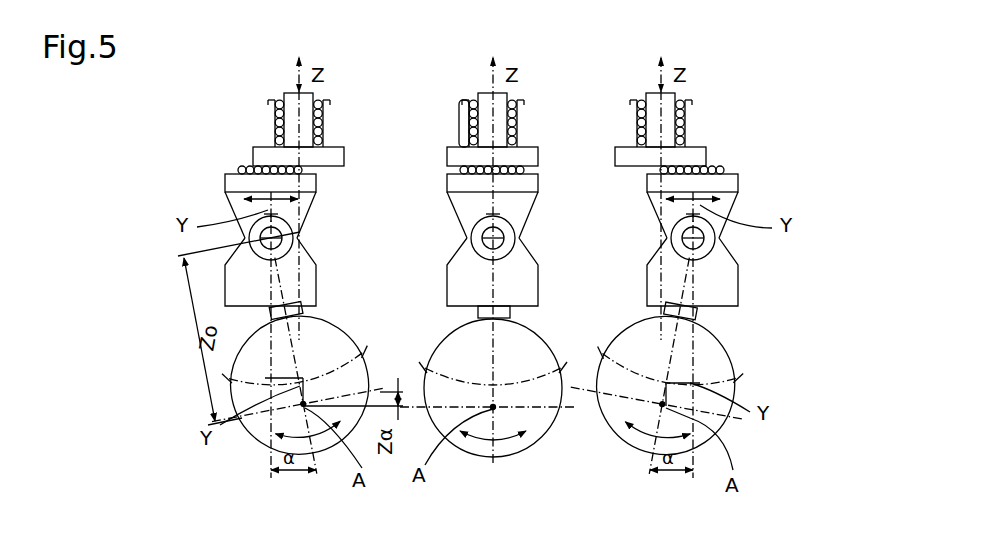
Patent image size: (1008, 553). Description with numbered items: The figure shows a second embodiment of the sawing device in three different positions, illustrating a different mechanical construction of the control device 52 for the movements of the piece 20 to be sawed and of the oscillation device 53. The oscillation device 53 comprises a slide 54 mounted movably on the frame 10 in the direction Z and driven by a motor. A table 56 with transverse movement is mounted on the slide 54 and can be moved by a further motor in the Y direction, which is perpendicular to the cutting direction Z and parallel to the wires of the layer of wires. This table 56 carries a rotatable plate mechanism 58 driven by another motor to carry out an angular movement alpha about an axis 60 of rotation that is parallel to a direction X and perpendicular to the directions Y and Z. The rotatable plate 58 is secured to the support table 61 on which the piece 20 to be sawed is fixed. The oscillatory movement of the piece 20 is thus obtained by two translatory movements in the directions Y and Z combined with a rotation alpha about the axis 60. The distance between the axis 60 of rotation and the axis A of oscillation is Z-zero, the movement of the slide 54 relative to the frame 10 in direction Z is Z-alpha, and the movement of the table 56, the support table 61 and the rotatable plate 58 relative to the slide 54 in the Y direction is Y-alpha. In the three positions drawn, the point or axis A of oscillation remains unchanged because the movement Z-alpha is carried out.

The frame 10 is at (458, 125).
The piece to be sawed 20 is at (532, 417).
The control device 52 is at (432, 152).
The oscillation device 53 is at (432, 245).
The slide 54 is at (488, 112).
The table 56 is at (528, 185).
The rotatable plate mechanism 58 is at (523, 262).
The axis of rotation 60 is at (500, 240).
The support table 61 is at (512, 300).